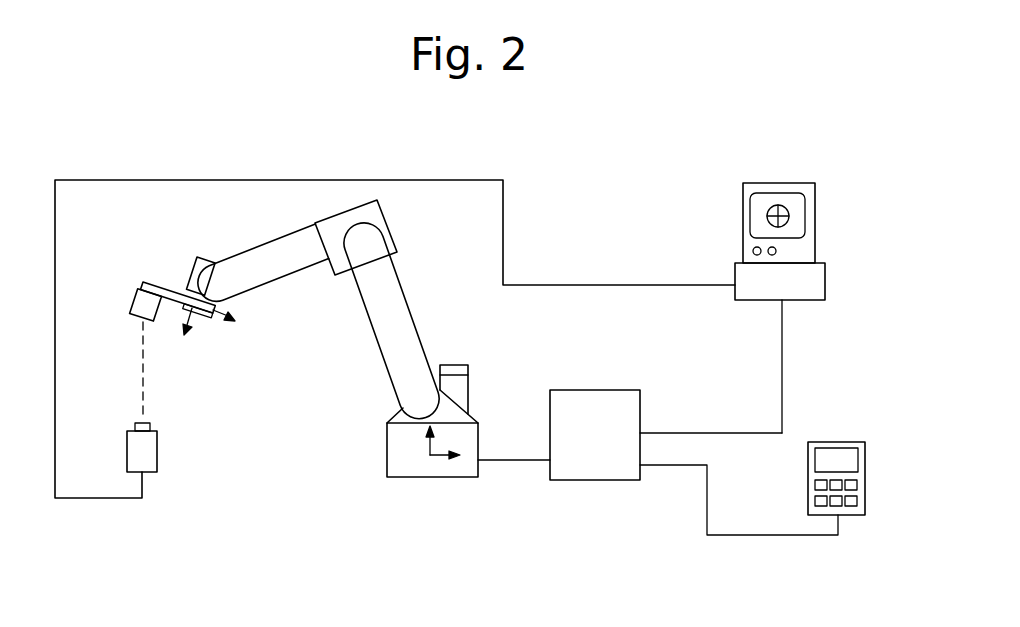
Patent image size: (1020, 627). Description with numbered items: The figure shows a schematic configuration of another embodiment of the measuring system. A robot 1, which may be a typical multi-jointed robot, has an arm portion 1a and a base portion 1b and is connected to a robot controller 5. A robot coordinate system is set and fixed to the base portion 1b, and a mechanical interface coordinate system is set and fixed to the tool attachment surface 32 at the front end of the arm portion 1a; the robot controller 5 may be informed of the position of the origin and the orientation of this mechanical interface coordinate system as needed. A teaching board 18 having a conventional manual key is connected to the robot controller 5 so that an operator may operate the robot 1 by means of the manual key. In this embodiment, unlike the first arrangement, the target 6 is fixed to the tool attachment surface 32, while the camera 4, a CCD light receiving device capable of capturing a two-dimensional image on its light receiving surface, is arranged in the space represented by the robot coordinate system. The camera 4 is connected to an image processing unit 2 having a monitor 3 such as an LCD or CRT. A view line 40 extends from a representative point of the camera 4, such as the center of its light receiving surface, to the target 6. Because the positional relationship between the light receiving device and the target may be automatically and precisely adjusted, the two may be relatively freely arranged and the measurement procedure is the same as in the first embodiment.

The robot 1 is at (428, 290).
The arm portion 1a is at (281, 264).
The base portion 1b is at (448, 470).
The image processing unit 2 is at (838, 220).
The monitor 3 is at (764, 203).
The camera 4 is at (137, 450).
The robot controller 5 is at (600, 400).
The target 6 is at (147, 305).
The teaching board 18 is at (835, 442).
The tool attachment surface 32 is at (178, 296).
The view line 40 is at (143, 383).